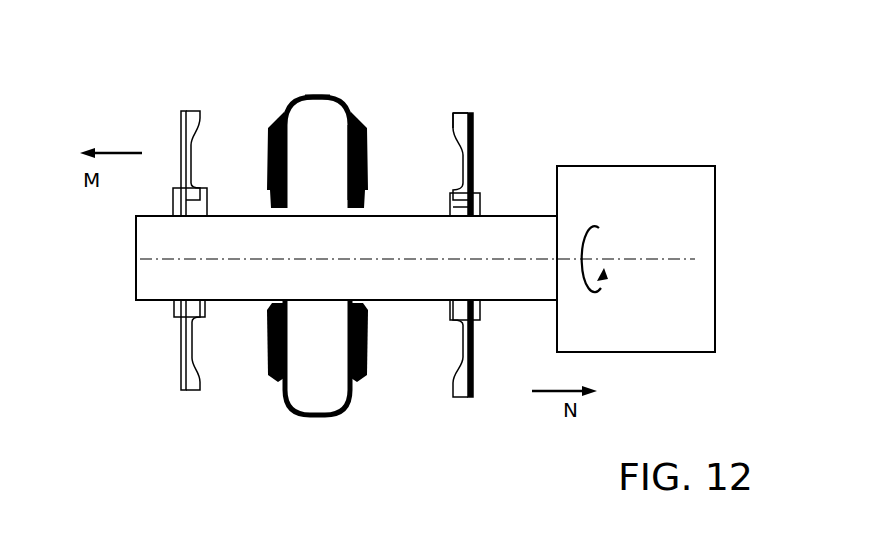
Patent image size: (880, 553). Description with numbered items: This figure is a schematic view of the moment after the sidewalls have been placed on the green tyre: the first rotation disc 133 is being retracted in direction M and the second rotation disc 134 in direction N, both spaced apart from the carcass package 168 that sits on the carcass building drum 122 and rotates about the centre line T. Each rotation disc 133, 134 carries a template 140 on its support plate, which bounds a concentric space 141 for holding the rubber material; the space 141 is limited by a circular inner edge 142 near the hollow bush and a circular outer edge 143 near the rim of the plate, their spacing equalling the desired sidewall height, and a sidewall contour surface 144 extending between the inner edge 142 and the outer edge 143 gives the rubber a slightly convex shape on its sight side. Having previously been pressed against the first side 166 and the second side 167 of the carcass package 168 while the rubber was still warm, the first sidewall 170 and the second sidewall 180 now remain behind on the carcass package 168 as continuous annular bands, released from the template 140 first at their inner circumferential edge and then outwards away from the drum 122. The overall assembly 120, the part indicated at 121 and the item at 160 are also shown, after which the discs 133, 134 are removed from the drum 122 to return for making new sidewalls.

The wheel assembly 120 is at (122, 74).
The drive motor 121 is at (665, 180).
The carcass building drum 122 is at (153, 292).
The first rotation disc 133 is at (194, 387).
The second rotation disc 134 is at (463, 396).
The template 140 is at (181, 128).
The space 141 is at (461, 146).
The inner edge 142 is at (454, 191).
The outer edge 143 is at (454, 123).
The sidewall contour surface 144 is at (470, 161).
The frame direction 160 is at (547, 440).
The first side 166 is at (304, 100).
The second side 167 is at (347, 118).
The carcass package 168 is at (326, 97).
The first sidewall 170 is at (272, 130).
The second sidewall 180 is at (369, 140).